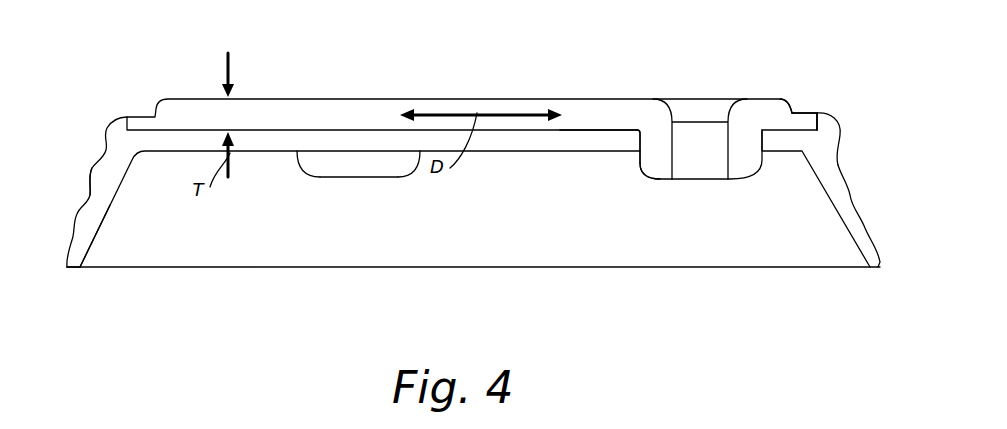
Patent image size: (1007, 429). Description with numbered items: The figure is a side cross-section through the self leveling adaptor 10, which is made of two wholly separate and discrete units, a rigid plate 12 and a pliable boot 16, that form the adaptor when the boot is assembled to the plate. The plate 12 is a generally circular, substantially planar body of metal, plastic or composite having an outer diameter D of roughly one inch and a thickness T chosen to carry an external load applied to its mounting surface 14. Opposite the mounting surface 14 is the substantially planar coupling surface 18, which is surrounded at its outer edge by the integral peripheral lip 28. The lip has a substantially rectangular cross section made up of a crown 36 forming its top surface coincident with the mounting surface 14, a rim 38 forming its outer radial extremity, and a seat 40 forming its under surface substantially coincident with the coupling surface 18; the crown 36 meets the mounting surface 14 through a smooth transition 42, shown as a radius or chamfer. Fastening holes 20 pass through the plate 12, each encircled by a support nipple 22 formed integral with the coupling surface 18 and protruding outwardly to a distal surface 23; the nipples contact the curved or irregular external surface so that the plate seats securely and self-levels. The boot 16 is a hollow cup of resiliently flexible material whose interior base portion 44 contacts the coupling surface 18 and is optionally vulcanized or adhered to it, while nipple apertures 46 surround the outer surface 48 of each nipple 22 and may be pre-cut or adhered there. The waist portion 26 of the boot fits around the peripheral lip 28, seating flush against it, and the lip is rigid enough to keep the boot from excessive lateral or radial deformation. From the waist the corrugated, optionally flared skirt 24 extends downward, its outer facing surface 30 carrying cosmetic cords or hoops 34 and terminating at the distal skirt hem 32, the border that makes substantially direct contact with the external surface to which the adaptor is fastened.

The self leveling adaptor 10 is at (117, 68).
The plate 12 is at (487, 98).
The mounting surface 14 is at (347, 98).
The boot 16 is at (108, 186).
The coupling surface 18 is at (577, 133).
The fastening hole 20 is at (685, 103).
The support nipple 22 is at (318, 180).
The surface 23 is at (388, 180).
The skirt 24 is at (90, 196).
The waist portion 26 is at (838, 128).
The peripheral lip 28 is at (813, 112).
The outer facing surface 30 is at (88, 205).
The skirt hem 32 is at (64, 266).
The cords 34 is at (92, 168).
The peripheral lip crown 36 is at (814, 112).
The rim 38 is at (837, 140).
The seat 40 is at (792, 132).
The transition 42 is at (792, 112).
The interior base portion 44 is at (598, 130).
The nipple aperture 46 is at (640, 153).
The outer surface 48 is at (297, 153).